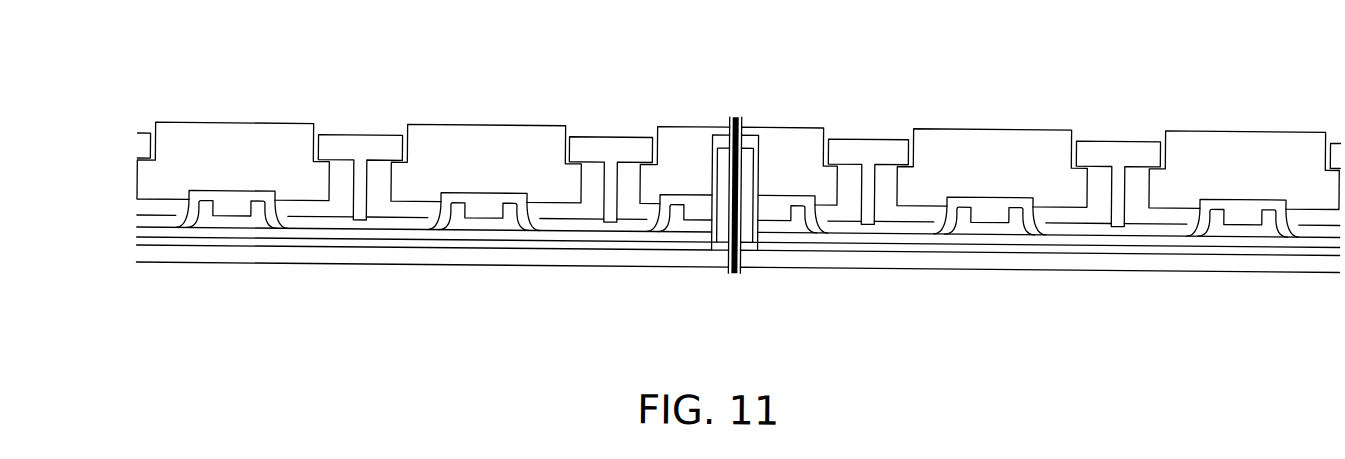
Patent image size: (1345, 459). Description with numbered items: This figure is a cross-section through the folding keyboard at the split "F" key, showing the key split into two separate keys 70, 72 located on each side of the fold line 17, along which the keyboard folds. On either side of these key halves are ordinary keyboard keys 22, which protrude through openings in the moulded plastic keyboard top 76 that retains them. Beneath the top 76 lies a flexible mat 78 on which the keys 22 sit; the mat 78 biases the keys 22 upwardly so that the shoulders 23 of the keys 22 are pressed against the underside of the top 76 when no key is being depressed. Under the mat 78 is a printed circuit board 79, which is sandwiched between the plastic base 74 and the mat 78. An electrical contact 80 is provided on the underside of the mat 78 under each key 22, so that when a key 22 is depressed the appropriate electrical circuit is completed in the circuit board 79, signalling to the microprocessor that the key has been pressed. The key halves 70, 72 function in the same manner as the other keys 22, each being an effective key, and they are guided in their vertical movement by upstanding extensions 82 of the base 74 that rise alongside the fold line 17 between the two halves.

The fold line 17 is at (736, 222).
The keyboard keys 22 is at (232, 121).
The shoulders 23 is at (137, 160).
The separate key 70 is at (678, 135).
The separate key 72 is at (804, 131).
The plastic base 74 is at (951, 256).
The moulded plastic keyboard top 76 is at (358, 138).
The flexible mat 78 is at (583, 221).
The printed circuit board 79 is at (558, 234).
The electrical contact 80 is at (487, 204).
The upstanding extensions 82 is at (724, 155).